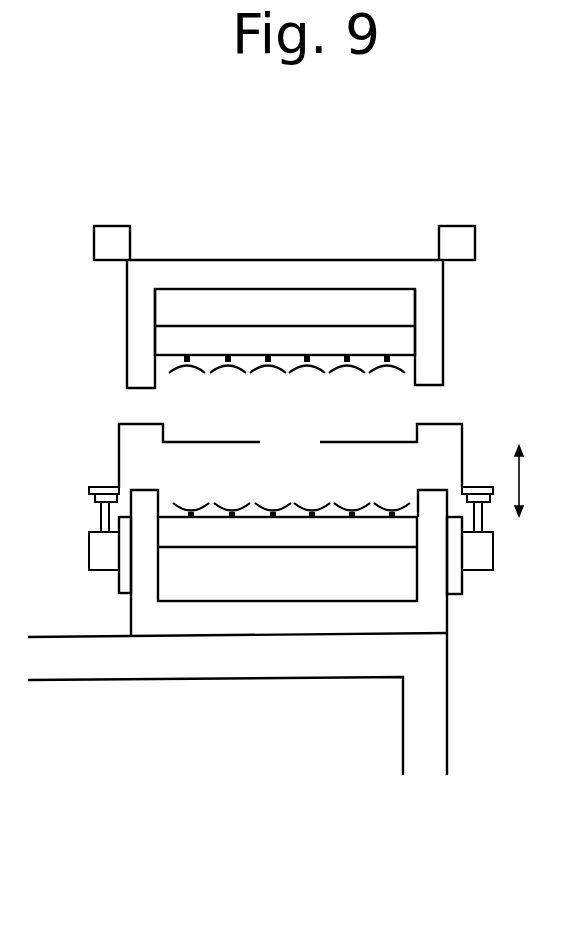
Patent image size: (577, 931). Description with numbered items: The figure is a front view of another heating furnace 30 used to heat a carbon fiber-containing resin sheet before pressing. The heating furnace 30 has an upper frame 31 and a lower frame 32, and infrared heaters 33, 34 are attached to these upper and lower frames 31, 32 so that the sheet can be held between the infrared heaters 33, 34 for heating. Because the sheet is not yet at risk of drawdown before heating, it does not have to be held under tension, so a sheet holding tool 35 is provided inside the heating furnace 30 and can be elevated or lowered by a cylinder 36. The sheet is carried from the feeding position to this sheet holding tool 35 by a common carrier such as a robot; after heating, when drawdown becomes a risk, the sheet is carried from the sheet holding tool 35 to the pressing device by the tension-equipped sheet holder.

The heating furnace 30 is at (290, 268).
The upper frame 31 is at (443, 308).
The lower frame 32 is at (435, 613).
The infrared heater 33 is at (260, 363).
The infrared heater 34 is at (227, 510).
The sheet holding tool 35 is at (385, 438).
The cylinder 36 is at (477, 548).